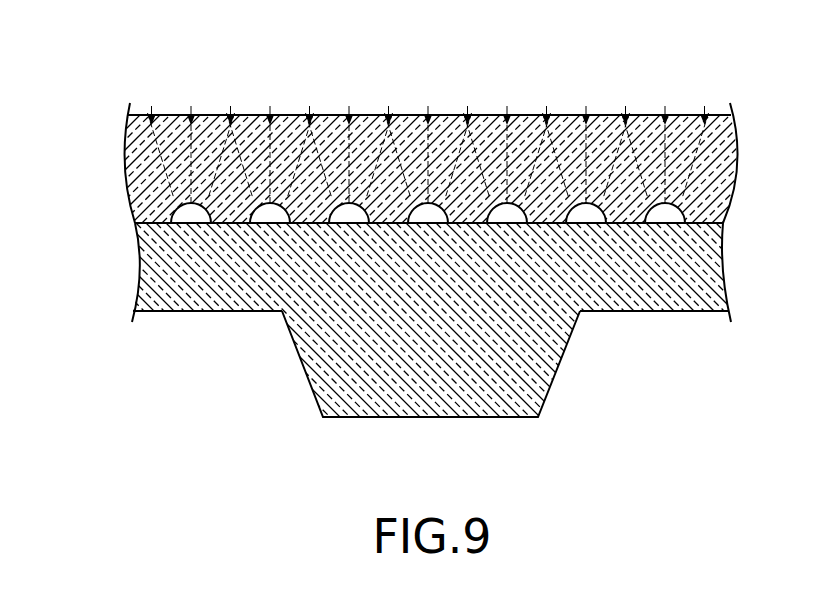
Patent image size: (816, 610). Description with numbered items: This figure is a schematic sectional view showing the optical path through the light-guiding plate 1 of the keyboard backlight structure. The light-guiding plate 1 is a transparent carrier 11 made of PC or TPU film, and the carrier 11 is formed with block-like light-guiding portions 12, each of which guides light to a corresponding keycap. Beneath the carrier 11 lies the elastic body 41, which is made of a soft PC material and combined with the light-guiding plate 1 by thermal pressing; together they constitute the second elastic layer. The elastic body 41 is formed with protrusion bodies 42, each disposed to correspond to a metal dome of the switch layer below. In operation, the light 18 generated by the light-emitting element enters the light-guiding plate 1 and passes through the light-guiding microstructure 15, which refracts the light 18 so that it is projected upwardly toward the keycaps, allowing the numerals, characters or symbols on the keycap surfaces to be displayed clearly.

The light-guiding plate 1 is at (489, 117).
The carrier 11 is at (145, 157).
The block-like light-guiding portion 12 is at (685, 208).
The light-guiding microstructure 15 is at (665, 214).
The light 18 is at (690, 106).
The elastic body 41 is at (211, 280).
The protrusion body 42 is at (318, 372).